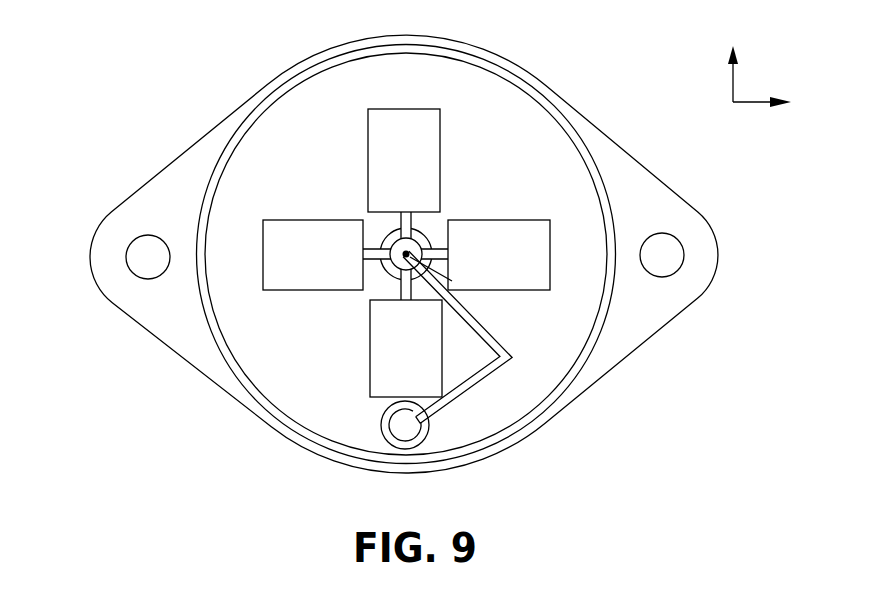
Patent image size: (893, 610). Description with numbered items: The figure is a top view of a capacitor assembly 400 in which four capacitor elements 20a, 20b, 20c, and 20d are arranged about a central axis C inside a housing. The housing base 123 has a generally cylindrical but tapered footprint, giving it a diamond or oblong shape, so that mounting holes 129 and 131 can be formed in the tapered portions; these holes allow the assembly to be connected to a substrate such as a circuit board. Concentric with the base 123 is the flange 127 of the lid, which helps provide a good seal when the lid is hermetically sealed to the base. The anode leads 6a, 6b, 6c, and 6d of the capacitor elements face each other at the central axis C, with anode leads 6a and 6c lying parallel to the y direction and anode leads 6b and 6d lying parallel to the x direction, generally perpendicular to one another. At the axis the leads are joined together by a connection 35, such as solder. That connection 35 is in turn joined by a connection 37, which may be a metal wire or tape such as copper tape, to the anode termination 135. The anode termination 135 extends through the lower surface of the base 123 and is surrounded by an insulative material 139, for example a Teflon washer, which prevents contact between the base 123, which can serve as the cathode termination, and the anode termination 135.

The capacitor assembly 400 is at (168, 104).
The base 123 is at (163, 200).
The flange 127 is at (317, 77).
The mounting hole 129 is at (145, 258).
The mounting hole 131 is at (665, 254).
The connection 35 is at (390, 240).
The capacitor element 20a is at (388, 173).
The capacitor element 20b is at (484, 261).
The capacitor element 20c is at (389, 354).
The capacitor element 20d is at (297, 261).
The anode lead 6a is at (416, 217).
The anode lead 6b is at (440, 249).
The anode lead 6c is at (397, 290).
The anode lead 6d is at (378, 264).
The connection 37 is at (476, 380).
The central axis C is at (452, 281).
The anode termination 135 is at (386, 411).
The insulative material 139 is at (386, 426).